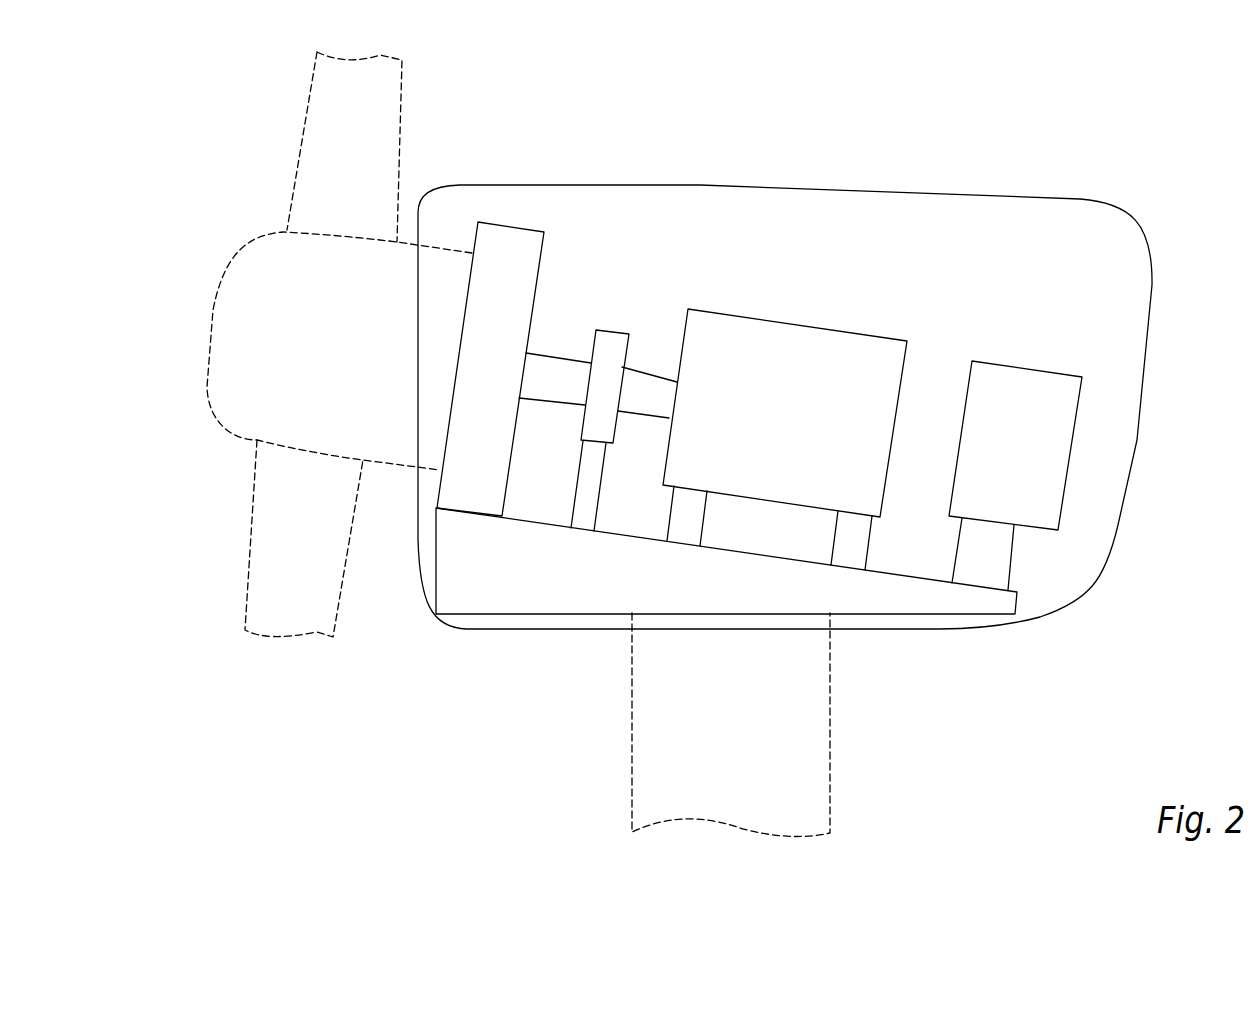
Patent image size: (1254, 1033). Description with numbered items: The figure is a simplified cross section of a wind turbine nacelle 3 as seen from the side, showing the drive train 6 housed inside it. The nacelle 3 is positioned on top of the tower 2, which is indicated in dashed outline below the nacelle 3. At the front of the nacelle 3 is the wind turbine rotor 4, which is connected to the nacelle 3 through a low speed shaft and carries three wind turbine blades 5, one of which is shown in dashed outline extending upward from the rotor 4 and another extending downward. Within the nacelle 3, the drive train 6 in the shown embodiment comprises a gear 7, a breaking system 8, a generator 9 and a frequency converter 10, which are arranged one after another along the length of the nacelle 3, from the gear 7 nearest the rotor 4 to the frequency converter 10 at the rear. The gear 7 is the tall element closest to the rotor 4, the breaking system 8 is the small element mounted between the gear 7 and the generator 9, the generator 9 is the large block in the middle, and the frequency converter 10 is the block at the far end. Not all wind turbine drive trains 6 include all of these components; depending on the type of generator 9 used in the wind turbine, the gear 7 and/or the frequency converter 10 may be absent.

The tower 2 is at (757, 770).
The wind turbine nacelle 3 is at (1186, 219).
The wind turbine rotor 4 is at (263, 300).
The wind turbine blade 5 is at (368, 140).
The drive train 6 is at (636, 397).
The gear 7 is at (508, 255).
The breaking system 8 is at (613, 352).
The generator 9 is at (753, 363).
The frequency converter 10 is at (1033, 412).